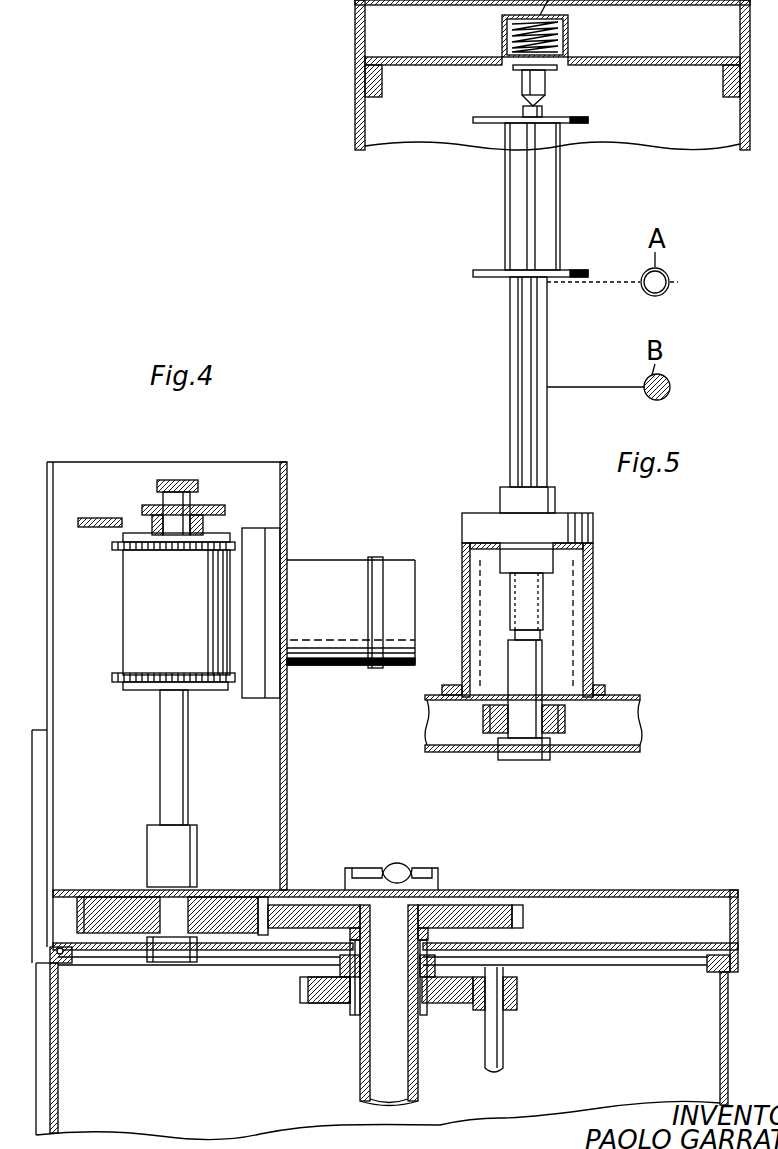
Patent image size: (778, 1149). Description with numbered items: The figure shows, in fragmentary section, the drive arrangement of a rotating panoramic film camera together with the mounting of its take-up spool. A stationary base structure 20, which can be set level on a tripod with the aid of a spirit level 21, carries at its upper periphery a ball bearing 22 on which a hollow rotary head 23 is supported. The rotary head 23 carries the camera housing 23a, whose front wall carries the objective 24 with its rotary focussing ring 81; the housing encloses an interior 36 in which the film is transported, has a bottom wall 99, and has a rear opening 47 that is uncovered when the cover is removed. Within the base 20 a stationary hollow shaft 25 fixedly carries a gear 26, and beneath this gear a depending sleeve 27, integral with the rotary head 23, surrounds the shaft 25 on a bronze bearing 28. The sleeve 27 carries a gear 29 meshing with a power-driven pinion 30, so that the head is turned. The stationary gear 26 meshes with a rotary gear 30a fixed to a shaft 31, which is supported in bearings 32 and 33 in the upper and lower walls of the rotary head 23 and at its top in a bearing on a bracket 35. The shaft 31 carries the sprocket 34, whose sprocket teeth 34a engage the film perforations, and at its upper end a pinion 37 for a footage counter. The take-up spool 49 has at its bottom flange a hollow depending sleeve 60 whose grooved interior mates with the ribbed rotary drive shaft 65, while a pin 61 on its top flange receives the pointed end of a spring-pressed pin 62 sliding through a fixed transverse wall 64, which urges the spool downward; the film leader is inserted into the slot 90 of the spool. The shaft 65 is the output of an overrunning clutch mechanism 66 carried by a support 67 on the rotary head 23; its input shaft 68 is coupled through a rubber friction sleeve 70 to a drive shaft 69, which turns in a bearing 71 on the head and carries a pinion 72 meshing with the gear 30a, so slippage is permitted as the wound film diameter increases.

In FIG. 4, the base structure 20 is at (716, 1027).
In FIG. 4, the spirit level 21 is at (420, 868).
In FIG. 4, the ball bearing 22 is at (722, 966).
In FIG. 5, the rotary head 23 is at (649, 711).
In FIG. 4, the rotary head 23 is at (637, 888).
In FIG. 4, the camera housing 23a is at (292, 470).
In FIG. 4, the objective 24 is at (358, 557).
In FIG. 4, the hollow shaft 25 is at (418, 1087).
In FIG. 4, the gear 26 is at (479, 910).
In FIG. 4, the depending sleeve 27 is at (423, 1012).
In FIG. 4, the bronze bearing 28 is at (358, 1013).
In FIG. 4, the gear 29 is at (303, 992).
In FIG. 4, the pinion 30 is at (517, 996).
In FIG. 4, the rotary gear 30a is at (262, 897).
In FIG. 4, the shaft 31 is at (182, 806).
In FIG. 4, the bearing 32 is at (186, 861).
In FIG. 4, the bearing 33 is at (178, 960).
In FIG. 4, the sprocket 34 is at (130, 624).
In FIG. 4, the sprocket teeth 34a is at (240, 546).
In FIG. 4, the bracket 35 is at (205, 526).
In FIG. 4, the interior 36 is at (33, 728).
In FIG. 4, the pinion 37 is at (178, 478).
In FIG. 4, the rear opening 47 is at (76, 750).
In FIG. 5, the take-up spool 49 is at (592, 116).
In FIG. 5, the hollow depending sleeve 60 is at (518, 283).
In FIG. 5, the pin 61 is at (543, 112).
In FIG. 5, the pin 62 is at (527, 77).
In FIG. 5, the transverse wall 64 is at (641, 60).
In FIG. 5, the rotary drive shaft 65 is at (548, 344).
In FIG. 5, the overrunning clutch mechanism 66 is at (575, 509).
In FIG. 5, the support 67 is at (594, 563).
In FIG. 5, the input shaft 68 is at (545, 600).
In FIG. 5, the drive shaft 69 is at (540, 678).
In FIG. 5, the friction sleeve 70 is at (514, 612).
In FIG. 5, the bearing 71 is at (538, 762).
In FIG. 5, the pinion 72 is at (568, 721).
In FIG. 4, the rotary focussing ring 81 is at (372, 670).
In FIG. 5, the slot 90 is at (535, 182).
In FIG. 4, the bottom wall 99 is at (240, 913).